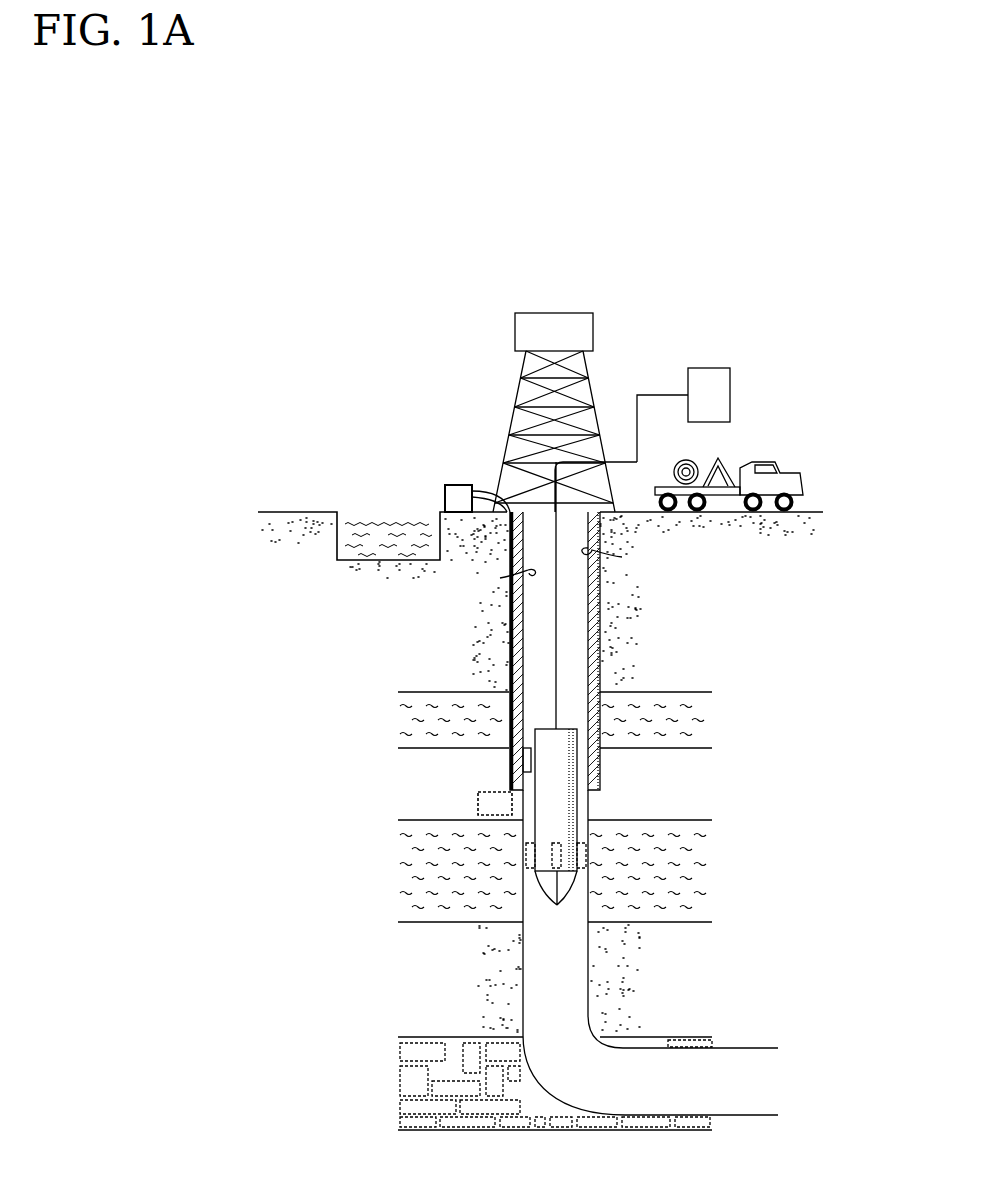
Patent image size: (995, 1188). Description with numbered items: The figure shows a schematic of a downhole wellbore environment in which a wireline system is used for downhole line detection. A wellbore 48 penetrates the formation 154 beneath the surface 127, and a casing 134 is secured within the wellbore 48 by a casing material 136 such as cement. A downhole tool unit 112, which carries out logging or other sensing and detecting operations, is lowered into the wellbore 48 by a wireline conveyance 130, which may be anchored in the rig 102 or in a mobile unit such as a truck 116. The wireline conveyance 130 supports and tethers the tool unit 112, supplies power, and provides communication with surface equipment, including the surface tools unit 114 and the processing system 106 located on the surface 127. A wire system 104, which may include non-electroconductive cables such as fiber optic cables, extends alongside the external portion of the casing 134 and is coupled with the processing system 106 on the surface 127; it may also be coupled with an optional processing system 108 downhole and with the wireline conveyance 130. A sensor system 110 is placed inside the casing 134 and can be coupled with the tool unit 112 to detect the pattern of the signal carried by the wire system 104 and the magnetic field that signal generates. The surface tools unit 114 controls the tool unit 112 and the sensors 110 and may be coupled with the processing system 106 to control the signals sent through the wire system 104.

The wellbore 48 is at (585, 988).
The rig 102 is at (595, 330).
The wire system 104 is at (509, 660).
The processing system 106 is at (443, 488).
The processing system 108 is at (477, 803).
The sensor system 110 is at (523, 760).
The downhole tool unit 112 is at (560, 797).
The surface tools unit 114 is at (731, 382).
The truck 116 is at (782, 468).
The surface 127 is at (302, 512).
The wireline conveyance 130 is at (555, 470).
The casing 134 is at (500, 578).
The casing material 136 is at (509, 618).
The formation 154 is at (376, 637).